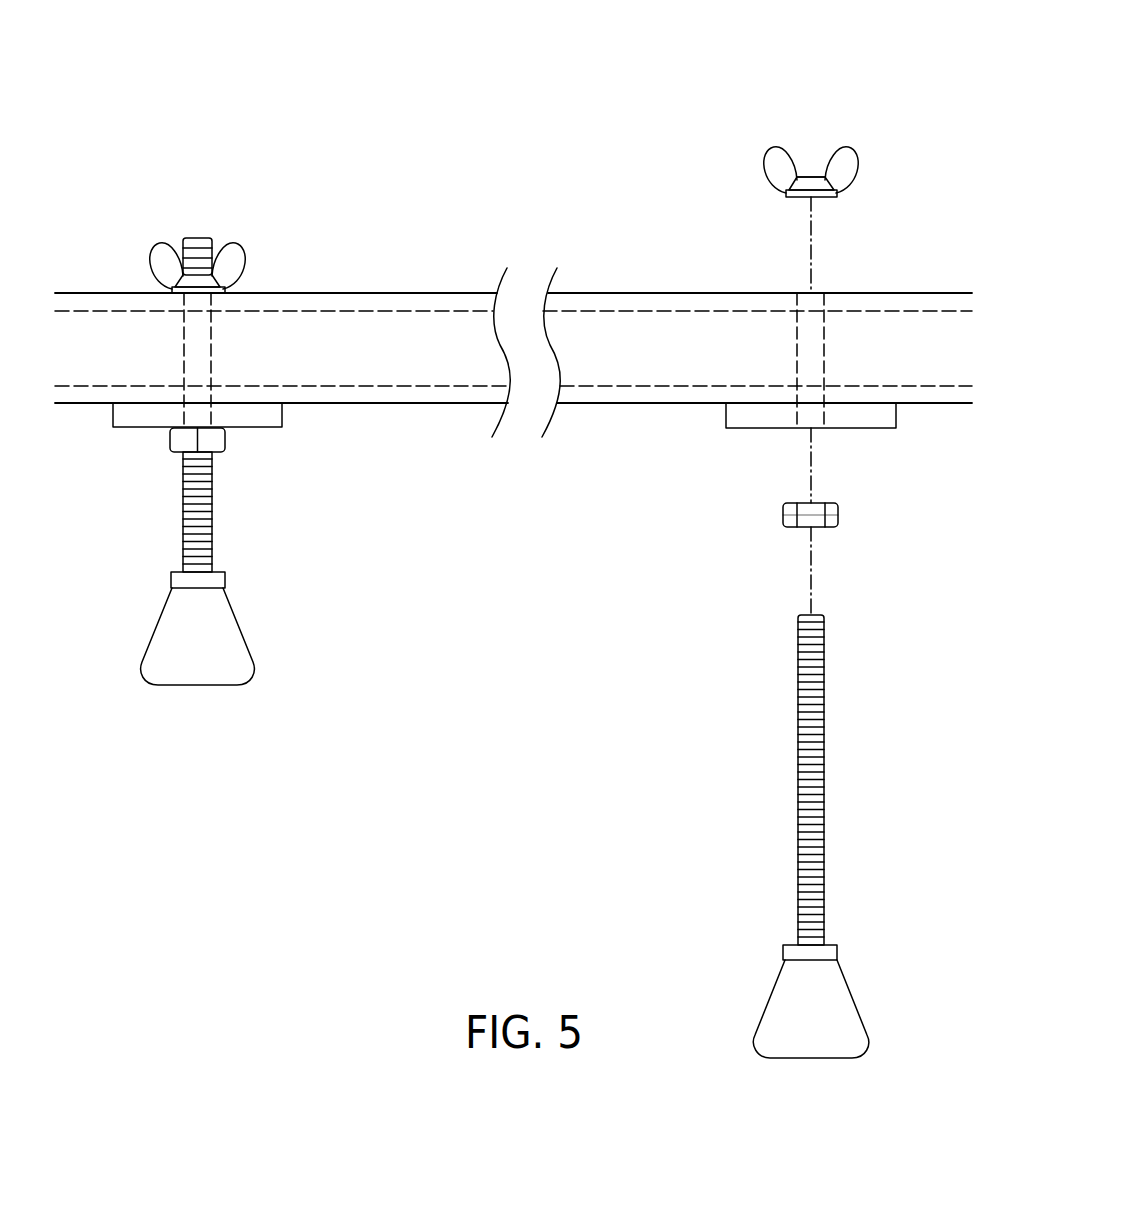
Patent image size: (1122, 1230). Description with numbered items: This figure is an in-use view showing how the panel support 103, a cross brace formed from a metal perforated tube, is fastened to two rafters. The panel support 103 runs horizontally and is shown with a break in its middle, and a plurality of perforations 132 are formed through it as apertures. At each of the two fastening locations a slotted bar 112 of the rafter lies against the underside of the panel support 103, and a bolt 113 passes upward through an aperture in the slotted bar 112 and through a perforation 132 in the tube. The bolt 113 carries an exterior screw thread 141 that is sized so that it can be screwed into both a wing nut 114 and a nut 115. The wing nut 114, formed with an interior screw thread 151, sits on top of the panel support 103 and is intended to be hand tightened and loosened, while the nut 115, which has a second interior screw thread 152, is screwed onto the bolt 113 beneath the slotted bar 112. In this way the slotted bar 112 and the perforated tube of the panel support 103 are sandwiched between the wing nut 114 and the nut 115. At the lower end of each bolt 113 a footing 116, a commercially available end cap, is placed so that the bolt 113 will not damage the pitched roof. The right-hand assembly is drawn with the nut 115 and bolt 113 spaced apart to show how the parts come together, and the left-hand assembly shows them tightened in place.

The panel support 103 is at (418, 295).
The slotted bar 112 is at (258, 418).
The bolt 113 is at (197, 240).
The wing nut 114 is at (158, 255).
The nut 115 is at (180, 440).
The footing 116 is at (222, 630).
The perforation 132 is at (205, 303).
The exterior screw thread 141 is at (202, 517).
The interior screw thread 151 is at (812, 170).
The second interior screw thread 152 is at (815, 515).